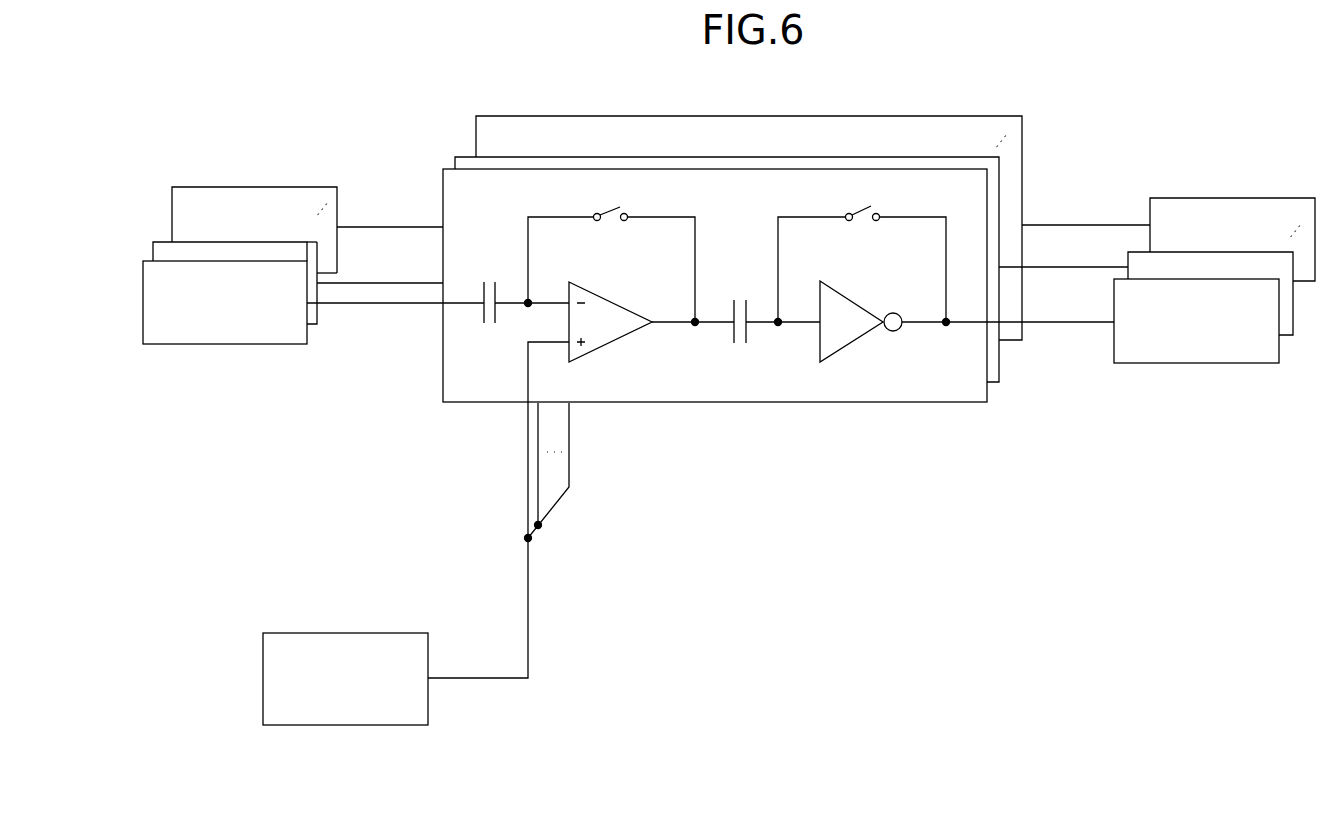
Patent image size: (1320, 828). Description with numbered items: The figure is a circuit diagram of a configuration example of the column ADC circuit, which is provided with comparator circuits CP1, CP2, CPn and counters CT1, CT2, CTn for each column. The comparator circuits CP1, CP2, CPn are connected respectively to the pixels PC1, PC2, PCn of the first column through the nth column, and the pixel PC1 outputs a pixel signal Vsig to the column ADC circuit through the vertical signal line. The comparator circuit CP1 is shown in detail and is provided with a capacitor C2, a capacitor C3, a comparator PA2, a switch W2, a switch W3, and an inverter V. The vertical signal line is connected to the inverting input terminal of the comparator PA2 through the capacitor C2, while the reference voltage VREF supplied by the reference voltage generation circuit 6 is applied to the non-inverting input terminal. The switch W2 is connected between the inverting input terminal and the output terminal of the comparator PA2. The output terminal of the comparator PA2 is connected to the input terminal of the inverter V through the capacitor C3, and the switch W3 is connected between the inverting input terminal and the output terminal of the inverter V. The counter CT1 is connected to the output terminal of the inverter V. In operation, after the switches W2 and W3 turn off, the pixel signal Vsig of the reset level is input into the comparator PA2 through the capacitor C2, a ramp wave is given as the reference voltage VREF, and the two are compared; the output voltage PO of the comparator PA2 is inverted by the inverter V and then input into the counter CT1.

The pixel PC1 is at (143, 302).
The pixel PC2 is at (153, 250).
The pixel PCn is at (172, 210).
The comparator circuit CP1 is at (446, 202).
The comparator circuit CP2 is at (455, 160).
The comparator circuit CPn is at (476, 132).
The counter CT1 is at (1114, 348).
The counter CT2 is at (1128, 261).
The counter CTn is at (1150, 212).
The capacitor C2 is at (475, 282).
The capacitor C3 is at (733, 298).
The switch W2 is at (597, 219).
The switch W3 is at (850, 217).
The comparator PA2 is at (615, 298).
The inverter V is at (856, 300).
The output voltage PO is at (716, 328).
The reference voltage generation circuit 6 is at (396, 633).
The pixel signal Vsig is at (395, 318).
The reference voltage VREF is at (490, 556).